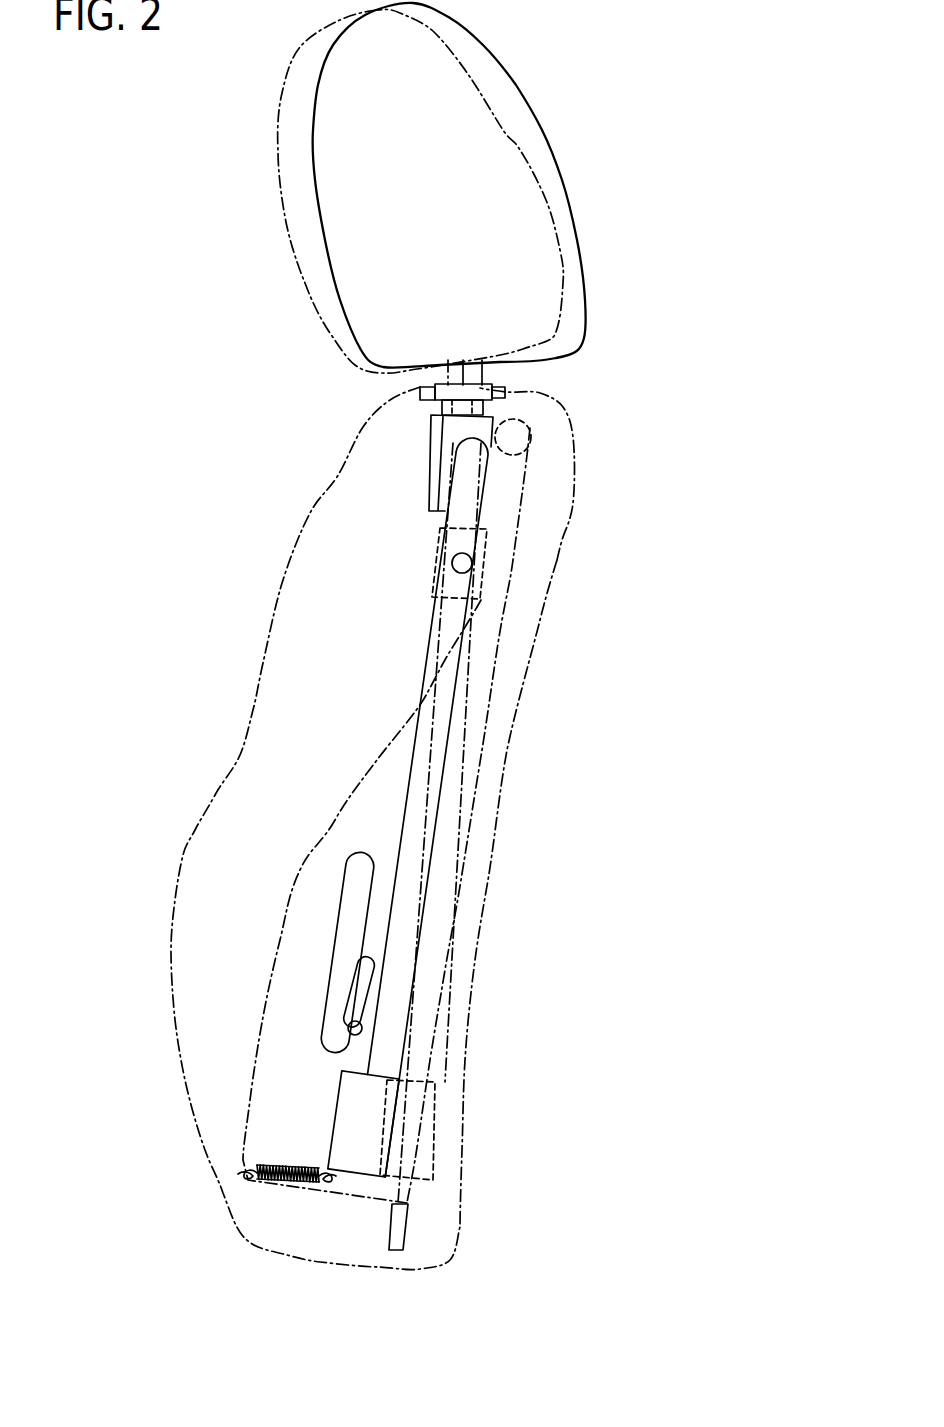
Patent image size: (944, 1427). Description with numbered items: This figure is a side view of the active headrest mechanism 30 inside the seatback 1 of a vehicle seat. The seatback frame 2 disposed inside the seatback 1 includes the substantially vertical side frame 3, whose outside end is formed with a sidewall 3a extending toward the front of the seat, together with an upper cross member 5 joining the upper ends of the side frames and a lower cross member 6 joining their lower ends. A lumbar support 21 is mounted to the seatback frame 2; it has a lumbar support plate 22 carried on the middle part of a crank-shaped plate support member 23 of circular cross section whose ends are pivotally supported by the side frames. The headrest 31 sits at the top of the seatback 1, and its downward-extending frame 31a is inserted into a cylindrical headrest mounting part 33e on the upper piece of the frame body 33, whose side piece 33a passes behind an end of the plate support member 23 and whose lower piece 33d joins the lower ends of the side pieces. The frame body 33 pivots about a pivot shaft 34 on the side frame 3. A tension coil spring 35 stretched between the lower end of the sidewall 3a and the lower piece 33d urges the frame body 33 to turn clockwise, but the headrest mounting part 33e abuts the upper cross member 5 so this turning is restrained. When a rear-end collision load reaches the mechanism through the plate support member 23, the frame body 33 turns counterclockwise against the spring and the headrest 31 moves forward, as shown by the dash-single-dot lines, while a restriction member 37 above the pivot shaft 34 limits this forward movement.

The seatback 1 is at (598, 458).
The seatback frame 2 is at (533, 532).
The side frame 3 is at (479, 792).
The sidewall 3a is at (263, 1017).
The upper cross member 5 is at (530, 423).
The lower cross member 6 is at (405, 1238).
The lumbar support 21 is at (330, 898).
The lumbar support plate 22 is at (332, 970).
The plate support member 23 is at (372, 993).
The active headrest mechanism 30 is at (404, 536).
The headrest 31 is at (505, 132).
The frame 31a is at (483, 378).
The frame body 33 is at (401, 771).
The side piece 33a is at (405, 817).
The lower piece 33d is at (337, 1103).
The headrest mounting part 33e is at (427, 467).
The pivot shaft 34 is at (461, 573).
The tension coil spring 35 is at (303, 1183).
The restriction member 37 is at (437, 552).